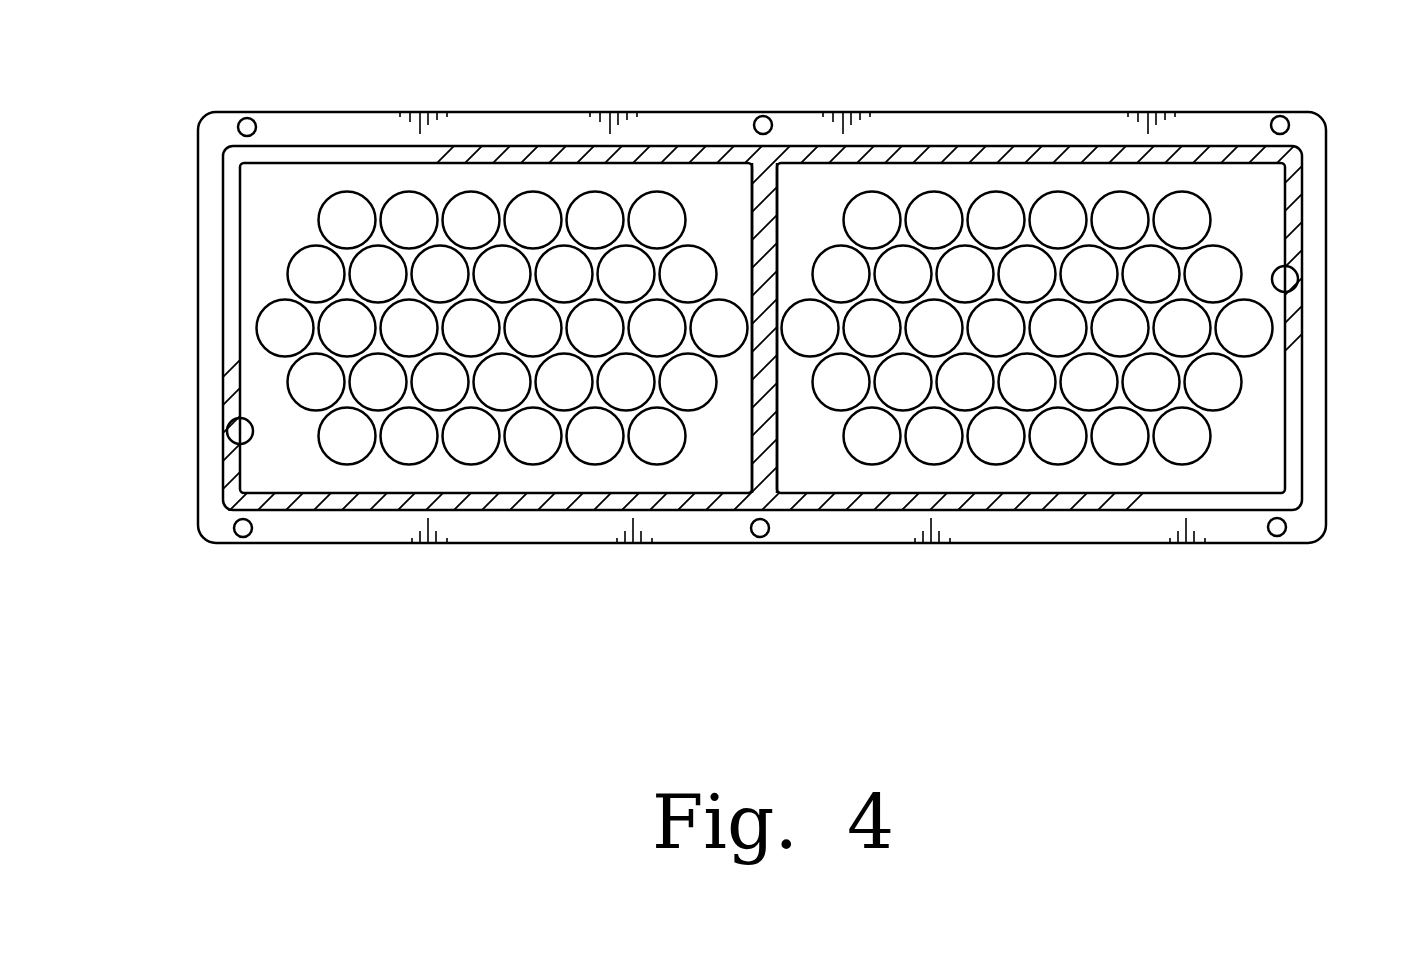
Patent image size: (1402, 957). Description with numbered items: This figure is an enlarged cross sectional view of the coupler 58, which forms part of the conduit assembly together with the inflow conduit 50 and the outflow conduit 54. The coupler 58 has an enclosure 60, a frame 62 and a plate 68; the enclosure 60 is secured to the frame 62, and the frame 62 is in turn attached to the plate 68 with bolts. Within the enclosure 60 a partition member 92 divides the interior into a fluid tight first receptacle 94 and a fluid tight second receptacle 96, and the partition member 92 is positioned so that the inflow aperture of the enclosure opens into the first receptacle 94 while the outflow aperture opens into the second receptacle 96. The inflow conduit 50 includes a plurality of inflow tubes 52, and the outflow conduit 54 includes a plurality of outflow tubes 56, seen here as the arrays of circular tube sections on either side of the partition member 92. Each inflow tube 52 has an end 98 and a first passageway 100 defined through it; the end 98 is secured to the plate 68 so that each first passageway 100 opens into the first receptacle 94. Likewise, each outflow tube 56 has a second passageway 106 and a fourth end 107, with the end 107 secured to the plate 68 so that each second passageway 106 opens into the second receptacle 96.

The inflow conduit 50 is at (1088, 328).
The inflow tube 52 is at (1198, 457).
The outflow conduit 54 is at (430, 328).
The outflow tube 56 is at (262, 340).
The coupler 58 is at (701, 350).
The enclosure 60 is at (487, 157).
The frame 62 is at (210, 157).
The plate 68 is at (375, 473).
The partition member 92 is at (765, 237).
The first receptacle 94 is at (1302, 285).
The second receptacle 96 is at (228, 433).
The end 98 is at (1274, 280).
The first passageway 100 is at (1057, 196).
The second passageway 106 is at (655, 196).
The end 107 is at (267, 356).